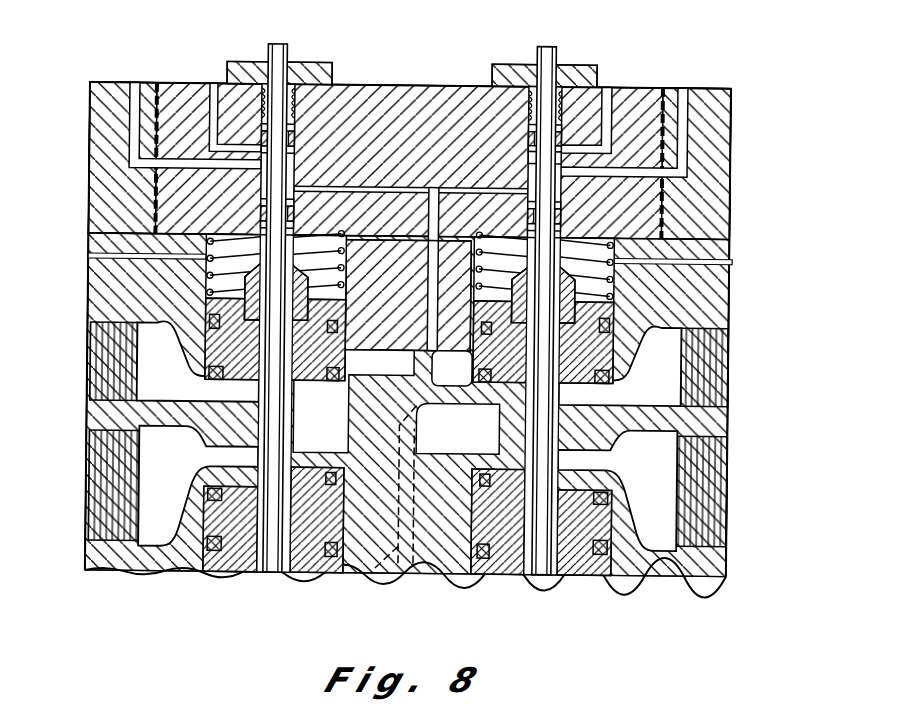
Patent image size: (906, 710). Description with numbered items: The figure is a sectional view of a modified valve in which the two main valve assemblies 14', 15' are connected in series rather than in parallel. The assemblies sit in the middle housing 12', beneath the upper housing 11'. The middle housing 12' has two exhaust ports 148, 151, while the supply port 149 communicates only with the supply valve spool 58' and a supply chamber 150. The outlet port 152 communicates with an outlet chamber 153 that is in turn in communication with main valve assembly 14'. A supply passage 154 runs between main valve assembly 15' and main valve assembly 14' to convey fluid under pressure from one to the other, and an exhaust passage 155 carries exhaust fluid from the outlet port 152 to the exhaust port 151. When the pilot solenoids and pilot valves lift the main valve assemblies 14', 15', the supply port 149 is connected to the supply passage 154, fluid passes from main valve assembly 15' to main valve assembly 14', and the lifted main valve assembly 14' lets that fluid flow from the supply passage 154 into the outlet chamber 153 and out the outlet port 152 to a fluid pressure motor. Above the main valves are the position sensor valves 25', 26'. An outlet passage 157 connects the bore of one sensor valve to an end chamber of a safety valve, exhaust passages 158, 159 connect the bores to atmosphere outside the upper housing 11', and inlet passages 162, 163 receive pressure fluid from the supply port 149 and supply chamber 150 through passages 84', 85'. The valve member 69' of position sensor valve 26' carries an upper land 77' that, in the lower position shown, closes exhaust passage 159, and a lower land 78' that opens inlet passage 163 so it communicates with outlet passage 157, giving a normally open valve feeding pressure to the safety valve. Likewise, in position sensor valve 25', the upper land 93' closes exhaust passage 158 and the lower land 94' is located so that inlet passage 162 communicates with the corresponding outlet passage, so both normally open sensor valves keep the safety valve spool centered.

The upper housing 11' is at (435, 150).
The middle housing 12' is at (434, 410).
The main valve assembly 14' is at (251, 330).
The main valve assembly 15' is at (587, 295).
The position sensor valve 25' is at (250, 307).
The position sensor valve 26' is at (576, 311).
The supply valve spool 58' is at (568, 342).
The valve member 69' is at (522, 105).
The upper land 77' is at (522, 135).
The lower land 78' is at (524, 216).
The passage 84' is at (412, 214).
The passage 85' is at (410, 295).
The upper land 93' is at (301, 138).
The lower land 94' is at (301, 214).
The exhaust port 148 is at (712, 508).
The supply port 149 is at (718, 369).
The supply chamber 150 is at (450, 364).
The exhaust port 151 is at (108, 525).
The outlet port 152 is at (108, 372).
The outlet chamber 153 is at (353, 401).
The supply passage 154 is at (458, 428).
The exhaust passage 155 is at (352, 440).
The outlet passage 157 is at (575, 170).
The exhaust passage 158 is at (260, 142).
The exhaust passage 159 is at (584, 120).
The inlet passage 162 is at (300, 186).
The inlet passage 163 is at (540, 150).